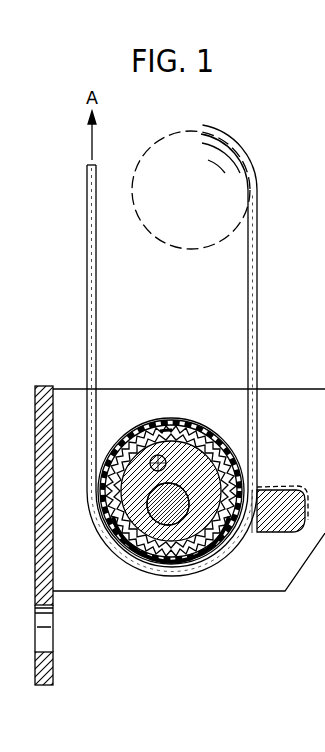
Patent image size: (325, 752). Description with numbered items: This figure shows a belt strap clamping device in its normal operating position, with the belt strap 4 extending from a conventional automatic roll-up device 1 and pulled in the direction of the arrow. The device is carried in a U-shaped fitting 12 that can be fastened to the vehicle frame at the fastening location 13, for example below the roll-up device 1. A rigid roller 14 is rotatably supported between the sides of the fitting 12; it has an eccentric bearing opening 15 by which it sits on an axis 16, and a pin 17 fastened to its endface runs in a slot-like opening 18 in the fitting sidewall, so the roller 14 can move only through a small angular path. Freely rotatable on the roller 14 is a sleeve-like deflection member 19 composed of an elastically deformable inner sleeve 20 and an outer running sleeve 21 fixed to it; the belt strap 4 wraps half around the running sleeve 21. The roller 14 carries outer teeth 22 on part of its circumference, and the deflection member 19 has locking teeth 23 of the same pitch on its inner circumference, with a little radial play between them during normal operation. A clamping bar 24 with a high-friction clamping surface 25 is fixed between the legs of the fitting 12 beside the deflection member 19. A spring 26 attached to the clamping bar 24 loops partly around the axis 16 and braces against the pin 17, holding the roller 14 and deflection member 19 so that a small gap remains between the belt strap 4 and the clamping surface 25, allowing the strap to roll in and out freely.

The automatic roll-up device 1 is at (184, 130).
The belt strap 4 is at (258, 292).
The U-shaped fitting 12 is at (290, 402).
The fastening location 13 is at (52, 641).
The roller 14 is at (195, 560).
The eccentric bearing opening 15 is at (186, 491).
The axis 16 is at (180, 560).
The pin 17 is at (120, 462).
The slot-like opening 18 is at (185, 428).
The deflection member 19 is at (151, 420).
The inner sleeve 20 is at (135, 427).
The outer running sleeve 21 is at (205, 428).
The outer teeth 22 is at (165, 560).
The locking teeth 23 is at (165, 432).
The clamping bar 24 is at (290, 530).
The clamping surface 25 is at (251, 495).
The spring 26 is at (293, 490).